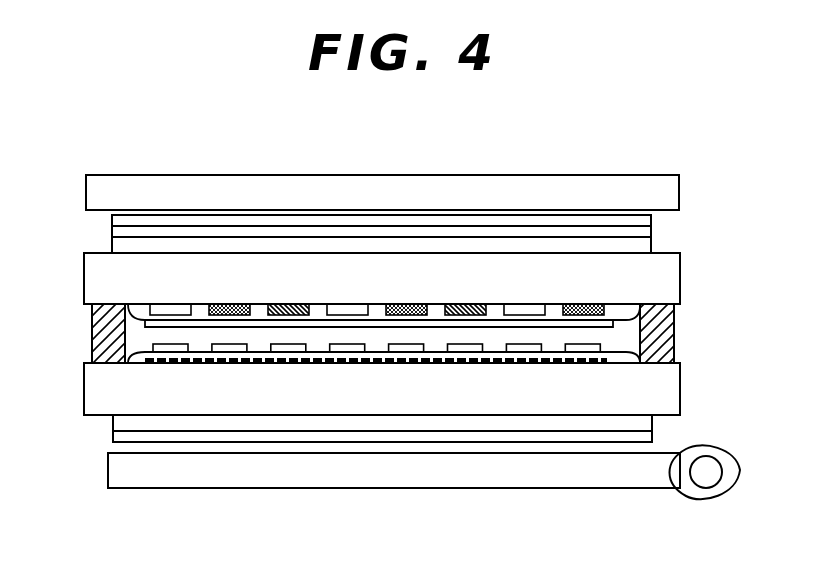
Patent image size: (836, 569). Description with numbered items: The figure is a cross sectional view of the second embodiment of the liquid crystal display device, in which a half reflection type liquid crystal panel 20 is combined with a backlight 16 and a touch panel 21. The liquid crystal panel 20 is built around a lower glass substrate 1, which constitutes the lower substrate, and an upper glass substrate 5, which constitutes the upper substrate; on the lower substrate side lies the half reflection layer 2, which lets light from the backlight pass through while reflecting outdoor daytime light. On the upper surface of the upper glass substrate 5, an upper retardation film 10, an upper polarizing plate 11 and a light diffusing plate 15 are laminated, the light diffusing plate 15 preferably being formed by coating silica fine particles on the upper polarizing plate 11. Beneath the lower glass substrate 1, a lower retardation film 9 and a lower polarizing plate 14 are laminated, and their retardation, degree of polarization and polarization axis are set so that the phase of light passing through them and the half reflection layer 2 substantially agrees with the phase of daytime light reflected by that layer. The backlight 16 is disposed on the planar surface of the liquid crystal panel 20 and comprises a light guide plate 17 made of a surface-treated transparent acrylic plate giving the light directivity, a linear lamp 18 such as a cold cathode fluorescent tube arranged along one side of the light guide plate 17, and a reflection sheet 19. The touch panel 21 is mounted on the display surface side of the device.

The touch panel 21 is at (543, 184).
The light diffusing plate 15 is at (651, 220).
The upper polarizing plate 11 is at (655, 228).
The upper retardation film 10 is at (643, 247).
The upper glass substrate 5 is at (668, 277).
The lower glass substrate 1 is at (662, 388).
The half reflection layer 2 is at (588, 365).
The lower retardation film 9 is at (432, 423).
The lower polarizing plate 14 is at (513, 438).
The light guide plate 17 is at (118, 477).
The backlight 16 is at (134, 500).
The linear lamp 18 is at (715, 468).
The reflection sheet 19 is at (742, 470).
The liquid crystal panel 20 is at (83, 216).